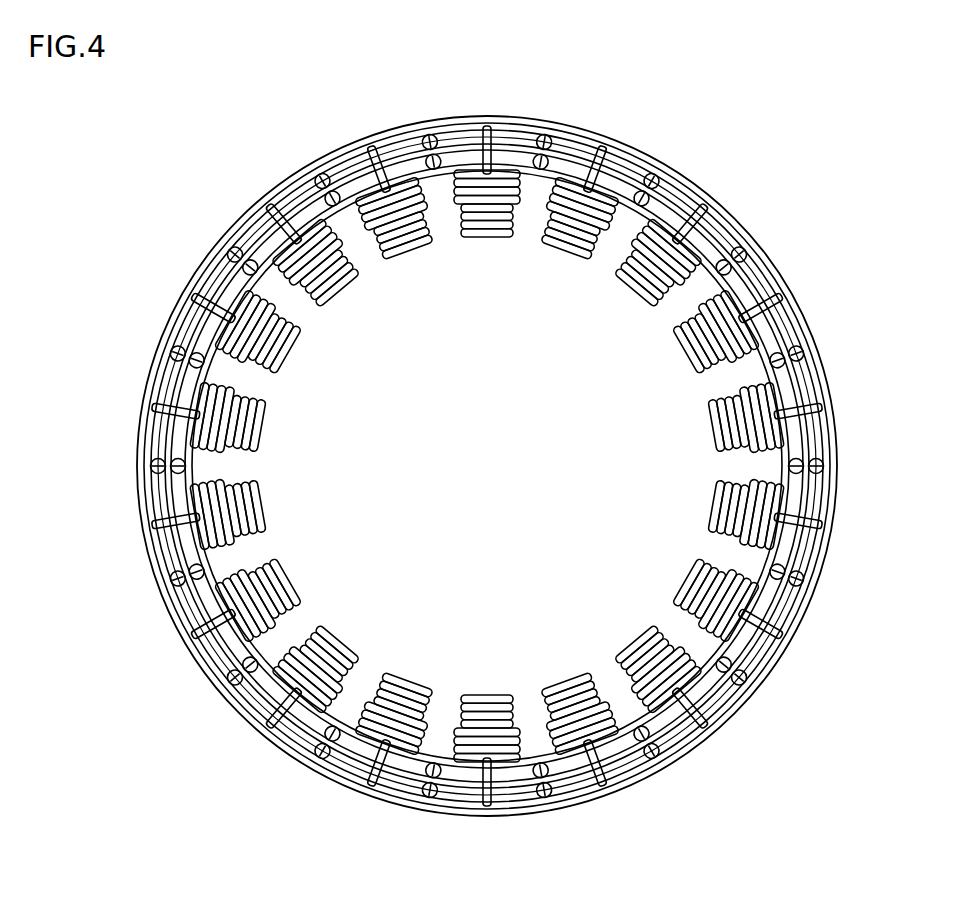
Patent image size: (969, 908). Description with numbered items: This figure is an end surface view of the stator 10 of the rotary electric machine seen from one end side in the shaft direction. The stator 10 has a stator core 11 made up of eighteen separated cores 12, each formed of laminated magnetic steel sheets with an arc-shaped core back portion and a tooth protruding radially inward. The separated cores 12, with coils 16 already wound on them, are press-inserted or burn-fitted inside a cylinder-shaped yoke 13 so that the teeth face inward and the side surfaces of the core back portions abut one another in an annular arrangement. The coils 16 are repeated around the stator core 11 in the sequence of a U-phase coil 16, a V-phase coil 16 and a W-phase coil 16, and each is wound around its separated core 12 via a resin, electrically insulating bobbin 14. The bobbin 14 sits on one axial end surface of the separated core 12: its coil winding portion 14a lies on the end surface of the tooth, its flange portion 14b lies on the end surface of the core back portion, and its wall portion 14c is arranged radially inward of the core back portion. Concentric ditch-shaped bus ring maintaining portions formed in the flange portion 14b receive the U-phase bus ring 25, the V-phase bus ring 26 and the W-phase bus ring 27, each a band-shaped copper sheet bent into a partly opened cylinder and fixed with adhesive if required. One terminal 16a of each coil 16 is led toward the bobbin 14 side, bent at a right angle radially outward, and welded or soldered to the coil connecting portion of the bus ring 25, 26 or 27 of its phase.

The stator 10 is at (188, 173).
The stator core 11 is at (548, 131).
The separated core 12 is at (650, 172).
The yoke 13 is at (199, 669).
The bobbin 14 is at (832, 403).
The coil winding portion 14a is at (712, 422).
The flange portion 14b is at (823, 375).
The wall portion 14c is at (775, 462).
The coil 16 is at (252, 497).
The terminal 16a is at (778, 290).
The U-phase bus ring 25 is at (733, 227).
The V-phase bus ring 26 is at (766, 247).
The W-phase bus ring 27 is at (752, 243).